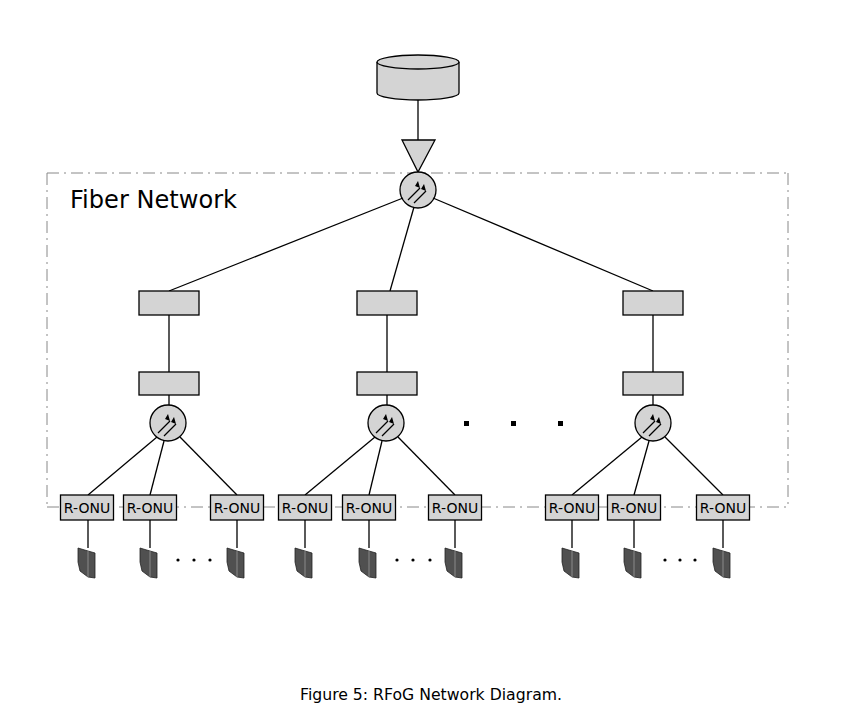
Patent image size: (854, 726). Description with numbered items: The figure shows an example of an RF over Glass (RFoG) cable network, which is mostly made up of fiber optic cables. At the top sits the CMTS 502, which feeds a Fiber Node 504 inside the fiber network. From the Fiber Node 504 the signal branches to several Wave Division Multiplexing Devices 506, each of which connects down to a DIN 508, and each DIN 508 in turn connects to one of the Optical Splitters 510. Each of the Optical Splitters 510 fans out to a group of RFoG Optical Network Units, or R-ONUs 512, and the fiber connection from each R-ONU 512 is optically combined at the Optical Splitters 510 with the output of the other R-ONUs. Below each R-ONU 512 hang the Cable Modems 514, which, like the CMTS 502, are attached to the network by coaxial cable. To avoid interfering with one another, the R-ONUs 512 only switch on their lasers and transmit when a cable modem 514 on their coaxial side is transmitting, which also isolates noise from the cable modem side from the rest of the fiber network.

The CMTS 502 is at (418, 54).
The Fiber Node 504 is at (440, 190).
The Wave Division Multiplexing Devices 506 is at (355, 303).
The DINs 508 is at (355, 383).
The Optical Splitters 510 is at (406, 413).
The RFoG Optical Network Units (R-ONU) 512 is at (250, 495).
The Cable Modems 514 is at (162, 578).